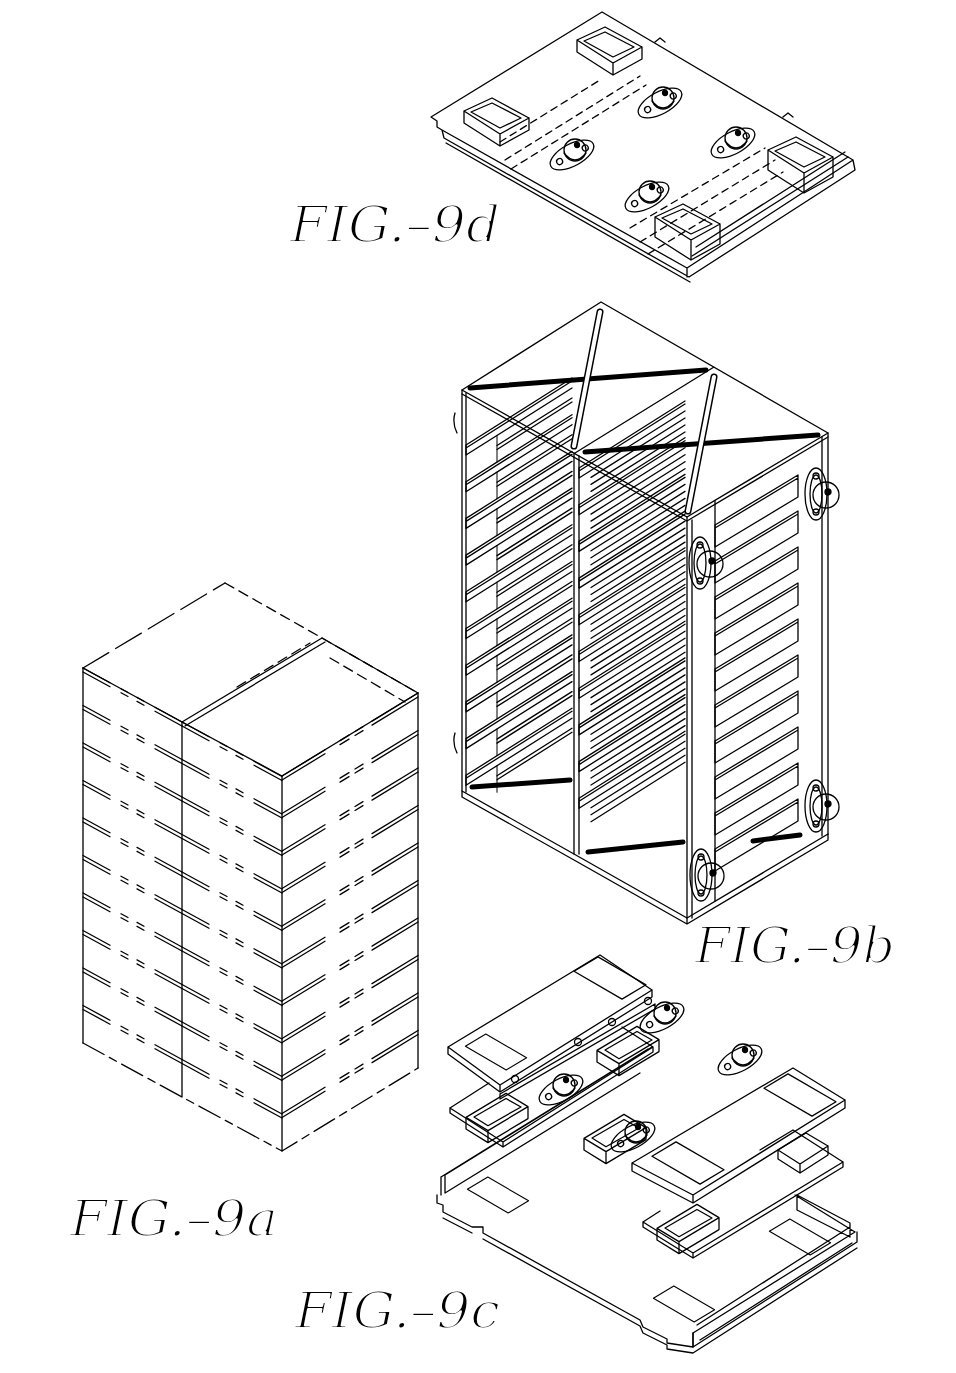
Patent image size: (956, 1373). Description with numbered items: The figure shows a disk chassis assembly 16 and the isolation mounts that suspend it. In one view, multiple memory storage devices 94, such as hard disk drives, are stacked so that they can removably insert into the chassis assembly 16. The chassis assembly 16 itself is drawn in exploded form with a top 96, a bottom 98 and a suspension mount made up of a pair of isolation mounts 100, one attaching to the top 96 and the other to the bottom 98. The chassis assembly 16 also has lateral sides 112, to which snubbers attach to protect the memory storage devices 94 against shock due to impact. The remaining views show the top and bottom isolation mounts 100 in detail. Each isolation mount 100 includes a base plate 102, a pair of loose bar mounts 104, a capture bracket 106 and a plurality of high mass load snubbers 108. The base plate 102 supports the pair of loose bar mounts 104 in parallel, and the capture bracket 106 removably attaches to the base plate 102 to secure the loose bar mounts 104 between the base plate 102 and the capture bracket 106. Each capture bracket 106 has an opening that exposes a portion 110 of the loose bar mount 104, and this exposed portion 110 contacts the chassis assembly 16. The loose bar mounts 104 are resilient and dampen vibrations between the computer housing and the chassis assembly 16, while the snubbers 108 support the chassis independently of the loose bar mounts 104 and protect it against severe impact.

In FIG. 9B, the chassis assembly 16 is at (817, 455).
In FIG. 9A, the memory storage devices 94 is at (90, 727).
In FIG. 9B, the top 96 is at (733, 400).
In FIG. 9B, the bottom 98 is at (628, 867).
In FIG. 9B, the isolation mounts 100 is at (836, 495).
In FIG. 9D, the isolation mounts 100 is at (730, 85).
In FIG. 9C, the isolation mounts 100 is at (858, 1245).
In FIG. 9D, the base plate 102 is at (692, 67).
In FIG. 9C, the base plate 102 is at (553, 1247).
In FIG. 9D, the loose bar mounts 104 is at (690, 230).
In FIG. 9C, the loose bar mounts 104 is at (640, 1065).
In FIG. 9D, the capture bracket 106 is at (780, 225).
In FIG. 9C, the capture bracket 106 is at (563, 973).
In FIG. 9D, the high mass load snubbers 108 is at (743, 120).
In FIG. 9C, the high mass load snubbers 108 is at (750, 1047).
In FIG. 9C, the exposed portion 110 is at (810, 1143).
In FIG. 9B, the lateral sides 112 is at (822, 618).